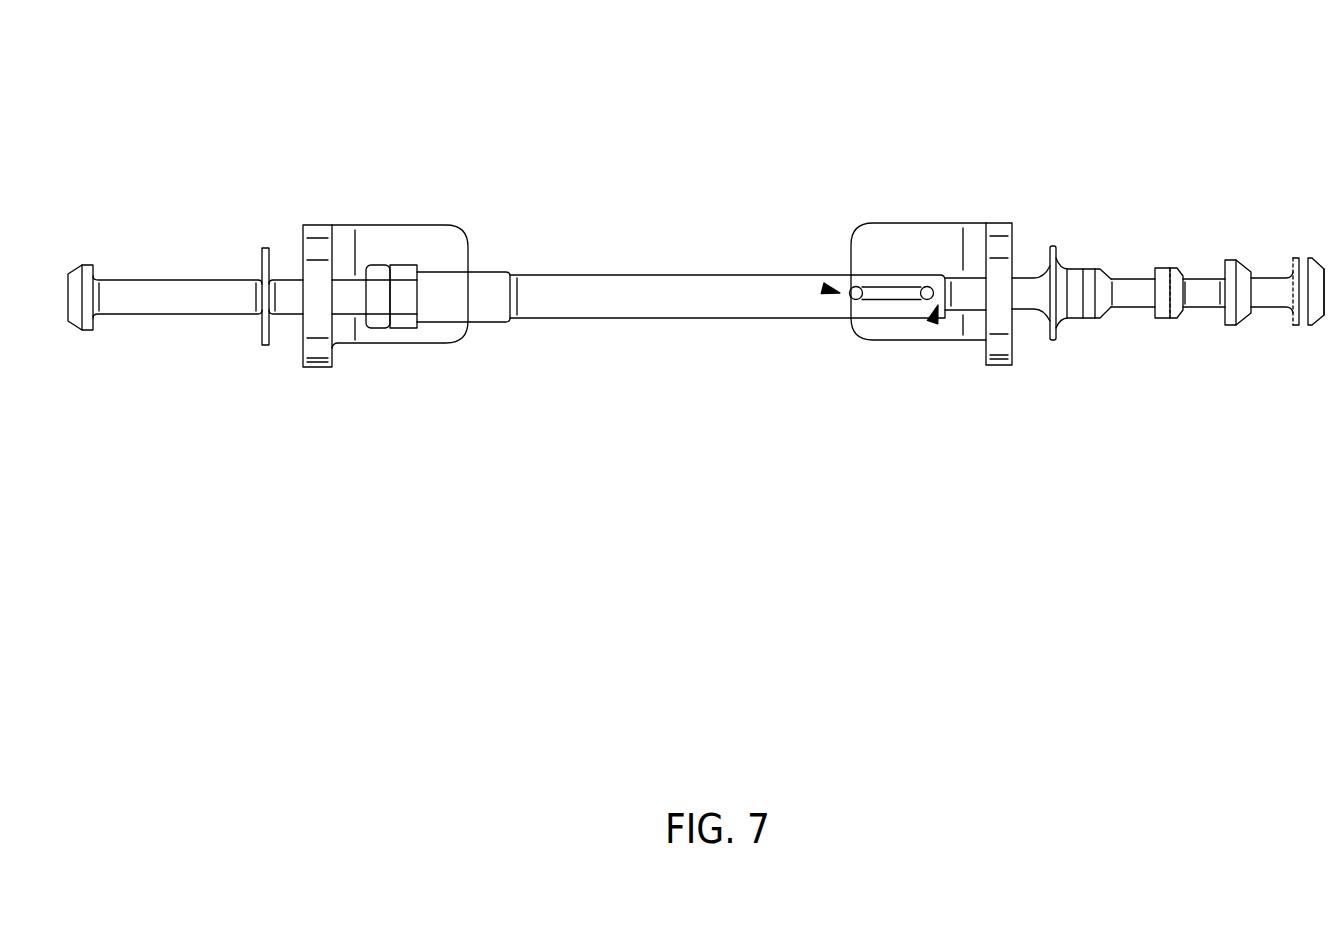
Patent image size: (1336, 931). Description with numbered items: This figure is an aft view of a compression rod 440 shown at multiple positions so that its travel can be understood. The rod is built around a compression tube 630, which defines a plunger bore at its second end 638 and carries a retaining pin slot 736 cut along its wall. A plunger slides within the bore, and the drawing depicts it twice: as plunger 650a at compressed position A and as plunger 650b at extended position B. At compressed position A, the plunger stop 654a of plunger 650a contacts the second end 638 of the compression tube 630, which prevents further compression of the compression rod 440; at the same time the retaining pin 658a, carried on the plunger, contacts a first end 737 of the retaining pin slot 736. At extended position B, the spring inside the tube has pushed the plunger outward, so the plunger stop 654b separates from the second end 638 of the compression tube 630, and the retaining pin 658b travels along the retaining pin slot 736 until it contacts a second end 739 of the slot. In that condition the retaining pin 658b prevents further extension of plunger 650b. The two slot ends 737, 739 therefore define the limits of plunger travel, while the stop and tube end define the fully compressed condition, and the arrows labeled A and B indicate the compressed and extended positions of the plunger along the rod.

The compression rod 440 is at (808, 150).
The compression tube 630 is at (806, 318).
The second end of compression tube 638 is at (1080, 218).
The plunger 650a is at (1192, 278).
The plunger 650b is at (1262, 309).
The plunger stop 654a is at (1090, 319).
The plunger stop 654b is at (1168, 319).
The retaining pin 658a is at (857, 286).
The retaining pin 658b is at (929, 286).
The retaining pin slot 736 is at (893, 301).
The first end of retaining pin slot 737 is at (822, 288).
The second end of retaining pin slot 739 is at (932, 320).
The compressed position A is at (1240, 200).
The extended position B is at (1290, 392).